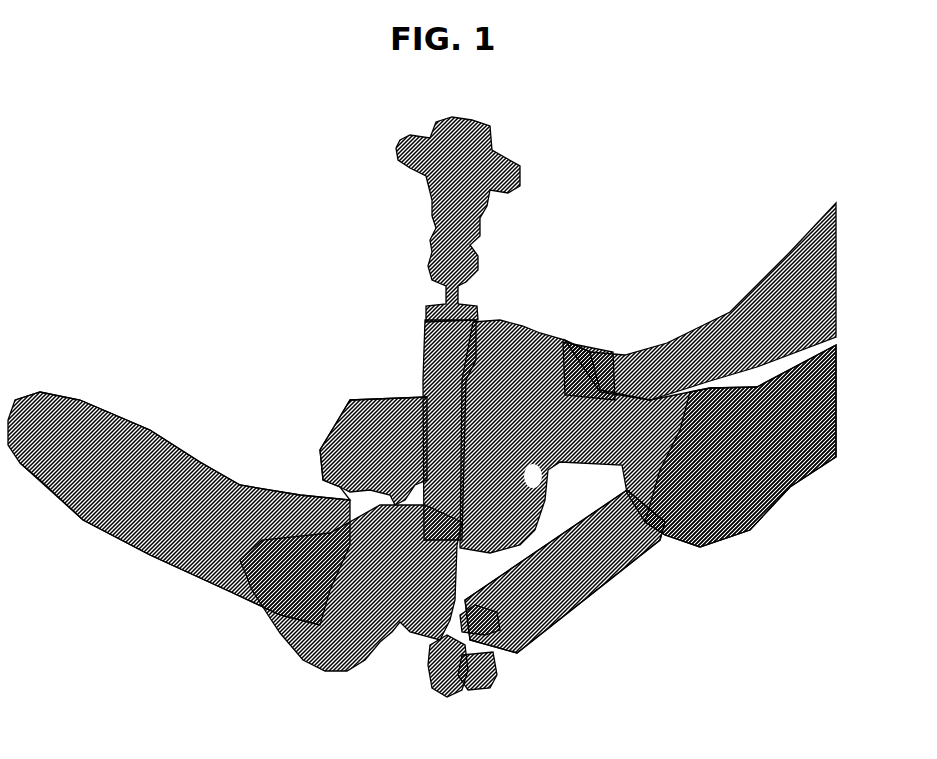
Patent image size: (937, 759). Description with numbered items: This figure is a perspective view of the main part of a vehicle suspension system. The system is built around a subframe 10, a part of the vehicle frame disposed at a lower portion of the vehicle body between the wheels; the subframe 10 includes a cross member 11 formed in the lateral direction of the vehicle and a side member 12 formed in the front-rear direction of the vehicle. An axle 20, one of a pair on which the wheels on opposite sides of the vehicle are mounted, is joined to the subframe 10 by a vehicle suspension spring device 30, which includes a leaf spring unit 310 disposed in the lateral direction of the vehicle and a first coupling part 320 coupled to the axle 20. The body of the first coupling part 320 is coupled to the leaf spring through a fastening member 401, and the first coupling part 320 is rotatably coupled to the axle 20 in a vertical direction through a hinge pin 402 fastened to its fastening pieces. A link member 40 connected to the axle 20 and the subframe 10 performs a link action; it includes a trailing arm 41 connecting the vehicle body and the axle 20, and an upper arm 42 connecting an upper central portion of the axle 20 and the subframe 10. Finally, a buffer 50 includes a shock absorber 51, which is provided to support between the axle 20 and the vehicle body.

The subframe 10 is at (737, 298).
The cross member 11 is at (783, 487).
The side member 12 is at (612, 385).
The axle 20 is at (397, 630).
The vehicle suspension spring device 30 is at (607, 582).
The leaf spring unit 310 is at (615, 571).
The first coupling part 320 is at (507, 655).
The link member 40 is at (247, 344).
The trailing arm 41 is at (166, 468).
The upper arm 42 is at (372, 407).
The buffer 50 is at (437, 360).
The shock absorber 51 is at (408, 409).
The fastening member 401 is at (490, 617).
The hinge pin 402 is at (483, 673).